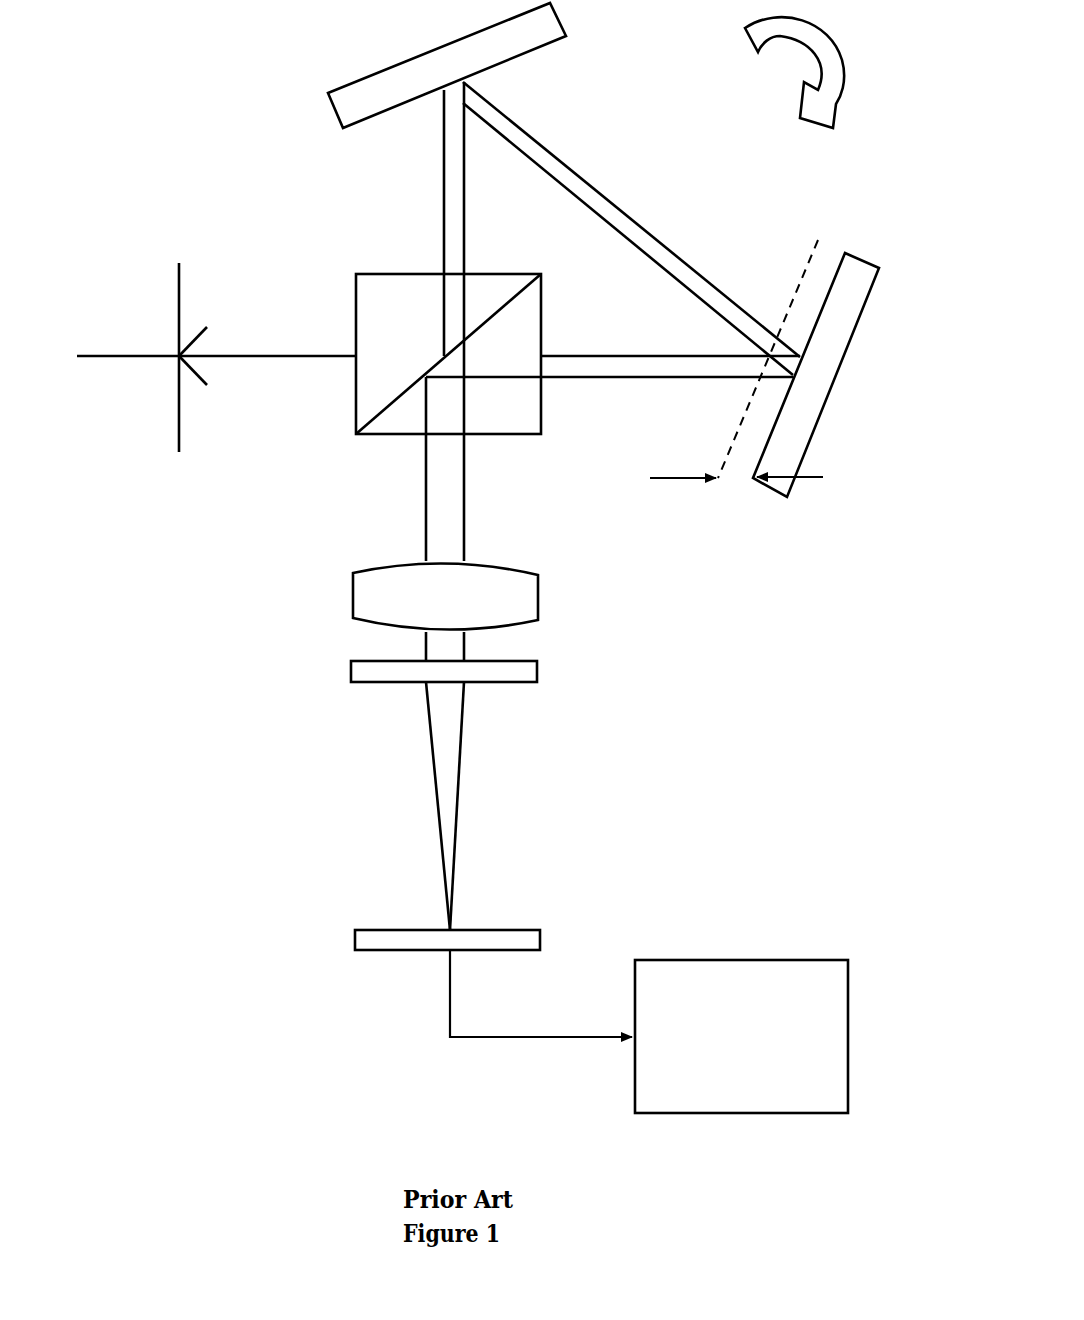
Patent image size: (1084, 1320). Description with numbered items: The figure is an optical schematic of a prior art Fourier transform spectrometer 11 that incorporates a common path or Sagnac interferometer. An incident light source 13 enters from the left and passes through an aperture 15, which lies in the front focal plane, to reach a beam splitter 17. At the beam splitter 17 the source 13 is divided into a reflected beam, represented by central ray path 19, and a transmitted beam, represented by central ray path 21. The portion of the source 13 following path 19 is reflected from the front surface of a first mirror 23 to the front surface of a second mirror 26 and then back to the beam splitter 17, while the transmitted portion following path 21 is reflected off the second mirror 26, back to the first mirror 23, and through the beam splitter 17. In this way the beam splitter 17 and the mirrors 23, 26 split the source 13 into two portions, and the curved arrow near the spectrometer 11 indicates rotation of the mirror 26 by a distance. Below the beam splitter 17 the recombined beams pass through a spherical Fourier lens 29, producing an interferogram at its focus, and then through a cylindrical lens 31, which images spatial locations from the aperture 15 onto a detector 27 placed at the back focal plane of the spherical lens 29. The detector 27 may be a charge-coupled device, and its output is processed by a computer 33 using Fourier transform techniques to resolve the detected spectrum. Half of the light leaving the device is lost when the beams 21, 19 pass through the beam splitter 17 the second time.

The Fourier transform spectrometer 11 is at (777, 72).
The incident light source 13 is at (112, 353).
The aperture 15 is at (182, 283).
The beam splitter 17 is at (352, 406).
The central ray path of reflected beam 19 is at (441, 172).
The central ray path of transmitted beam 21 is at (535, 135).
The first mirror 23 is at (365, 76).
The second mirror 26 is at (848, 360).
The detector 27 is at (352, 937).
The spherical (Fourier) lens 29 is at (350, 592).
The cylindrical lens 31 is at (350, 675).
The computer 33 is at (728, 958).